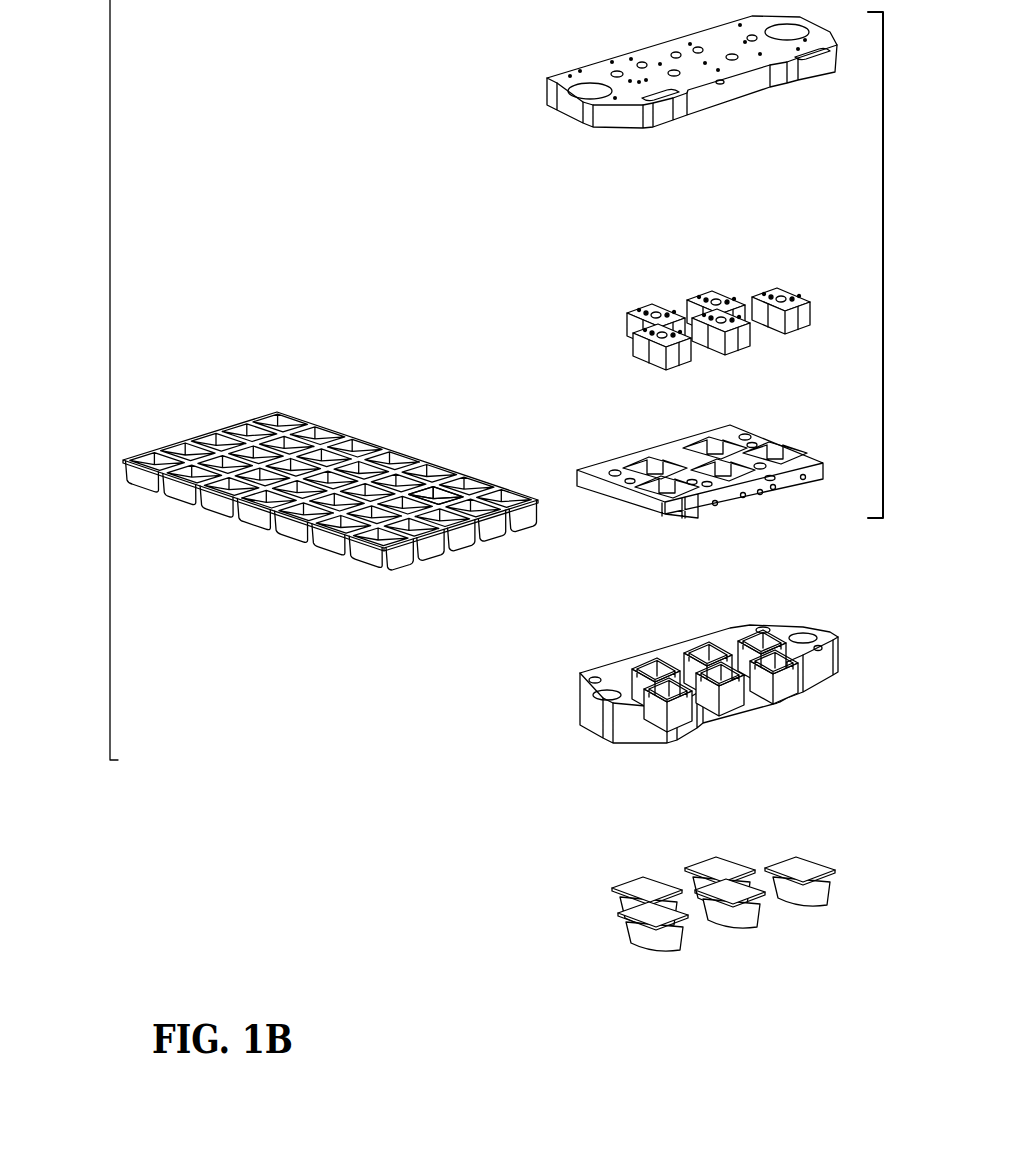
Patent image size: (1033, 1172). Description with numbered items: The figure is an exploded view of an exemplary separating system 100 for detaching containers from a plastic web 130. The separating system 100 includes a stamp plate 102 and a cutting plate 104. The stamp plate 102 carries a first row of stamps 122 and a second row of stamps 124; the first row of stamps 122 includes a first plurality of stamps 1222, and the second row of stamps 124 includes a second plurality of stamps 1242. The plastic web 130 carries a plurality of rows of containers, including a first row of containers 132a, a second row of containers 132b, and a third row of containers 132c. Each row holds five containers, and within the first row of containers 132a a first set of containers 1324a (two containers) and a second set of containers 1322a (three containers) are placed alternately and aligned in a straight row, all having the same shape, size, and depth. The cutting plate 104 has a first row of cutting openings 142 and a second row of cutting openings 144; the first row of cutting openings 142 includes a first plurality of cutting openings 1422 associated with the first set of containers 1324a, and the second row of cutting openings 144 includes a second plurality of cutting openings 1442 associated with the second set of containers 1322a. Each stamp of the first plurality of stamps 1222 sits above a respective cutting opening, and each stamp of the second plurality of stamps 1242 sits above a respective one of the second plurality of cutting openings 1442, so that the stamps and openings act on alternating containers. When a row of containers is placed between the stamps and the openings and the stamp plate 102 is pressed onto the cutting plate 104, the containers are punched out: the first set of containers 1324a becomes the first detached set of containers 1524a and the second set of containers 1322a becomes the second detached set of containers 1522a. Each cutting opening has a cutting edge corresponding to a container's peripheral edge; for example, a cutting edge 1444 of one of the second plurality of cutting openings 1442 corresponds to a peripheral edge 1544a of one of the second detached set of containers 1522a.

The separating system 100 is at (110, 373).
The stamp plate 102 is at (883, 261).
The cutting plate 104 is at (597, 737).
The first row of stamps 122 is at (617, 337).
The first plurality of stamps 1222 is at (697, 288).
The second row of stamps 124 is at (630, 365).
The second plurality of stamps 1242 is at (697, 357).
The plastic web 130 is at (253, 420).
The first row of containers 132a is at (355, 568).
The second row of containers 132b is at (340, 557).
The third row of containers 132c is at (298, 545).
The second set of containers 1322a is at (507, 523).
The first set of containers 1324a is at (467, 503).
The first row of cutting openings 142 is at (617, 683).
The second row of cutting openings 144 is at (637, 697).
The first plurality of cutting openings 1422 is at (700, 638).
The second plurality of cutting openings 1442 is at (800, 702).
The cutting edge 1444 is at (777, 640).
The second detached set of containers 1522a is at (827, 905).
The first detached set of containers 1524a is at (683, 863).
The peripheral edge 1544a is at (803, 858).